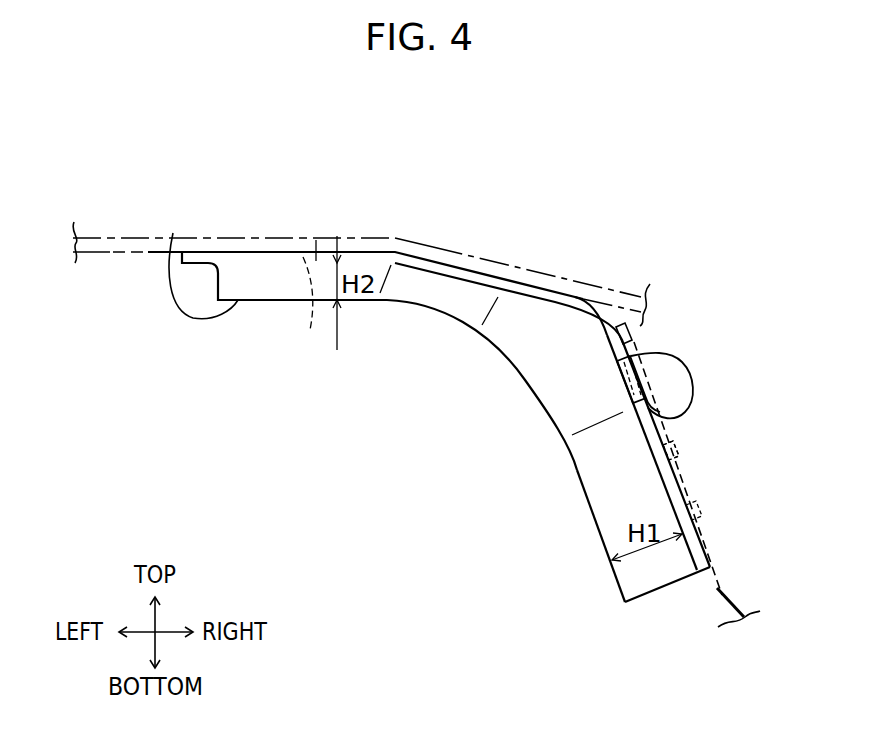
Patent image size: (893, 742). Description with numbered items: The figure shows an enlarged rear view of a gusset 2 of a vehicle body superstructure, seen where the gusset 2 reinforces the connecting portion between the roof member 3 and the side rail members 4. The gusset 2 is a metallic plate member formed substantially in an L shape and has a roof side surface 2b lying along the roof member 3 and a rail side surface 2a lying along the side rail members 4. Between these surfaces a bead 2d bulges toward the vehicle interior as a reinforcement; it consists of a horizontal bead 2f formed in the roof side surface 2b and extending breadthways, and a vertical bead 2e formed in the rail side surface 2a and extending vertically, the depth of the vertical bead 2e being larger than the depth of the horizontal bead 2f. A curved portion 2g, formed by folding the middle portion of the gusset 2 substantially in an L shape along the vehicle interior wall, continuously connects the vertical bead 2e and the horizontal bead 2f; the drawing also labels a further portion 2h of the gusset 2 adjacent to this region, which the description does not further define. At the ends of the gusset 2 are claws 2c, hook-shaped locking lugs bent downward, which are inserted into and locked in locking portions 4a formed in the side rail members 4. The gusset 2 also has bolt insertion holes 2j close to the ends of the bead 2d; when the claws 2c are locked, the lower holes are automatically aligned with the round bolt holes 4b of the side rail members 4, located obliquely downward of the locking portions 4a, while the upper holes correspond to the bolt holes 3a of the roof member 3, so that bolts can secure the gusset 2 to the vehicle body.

The gusset 2 is at (239, 205).
The rail side surface 2a is at (612, 582).
The roof side surface 2b is at (198, 252).
The claw 2c is at (690, 375).
The bead 2d is at (425, 551).
The vertical bead 2e is at (590, 518).
The horizontal bead 2f is at (268, 302).
The curved portion 2g is at (518, 370).
The inner surface of vertical wall 2h is at (623, 387).
The bolt insertion hole 2j is at (733, 512).
The roof member 3 is at (397, 237).
The bolt hole 3a is at (257, 254).
The side rail member 4 is at (737, 593).
The locking portion 4a is at (640, 348).
The bolt hole 4b is at (690, 462).